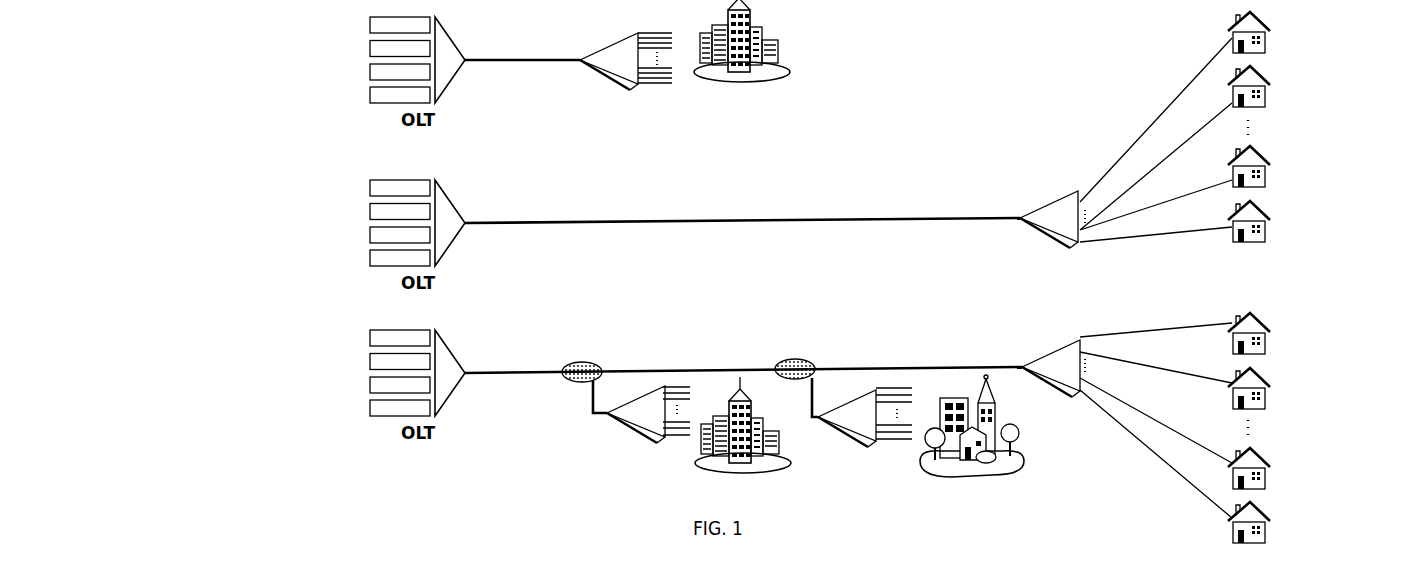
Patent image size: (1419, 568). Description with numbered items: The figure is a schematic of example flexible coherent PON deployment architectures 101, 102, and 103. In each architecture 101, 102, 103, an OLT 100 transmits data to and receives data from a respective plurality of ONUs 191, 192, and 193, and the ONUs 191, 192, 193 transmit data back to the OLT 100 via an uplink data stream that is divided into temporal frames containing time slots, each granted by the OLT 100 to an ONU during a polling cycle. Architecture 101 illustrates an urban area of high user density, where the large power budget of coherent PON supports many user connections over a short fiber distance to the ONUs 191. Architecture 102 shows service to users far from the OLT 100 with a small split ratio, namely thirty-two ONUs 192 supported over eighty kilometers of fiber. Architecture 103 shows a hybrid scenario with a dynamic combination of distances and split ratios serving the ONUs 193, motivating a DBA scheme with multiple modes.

The OLT 100 is at (370, 97).
The flexible CPON deployment architecture 101 is at (210, 70).
The flexible CPON deployment architecture 102 is at (210, 225).
The flexible CPON deployment architecture 103 is at (210, 378).
The ONUs 191 is at (812, 56).
The ONUs 192 is at (1268, 12).
The ONUs 193 is at (680, 465).